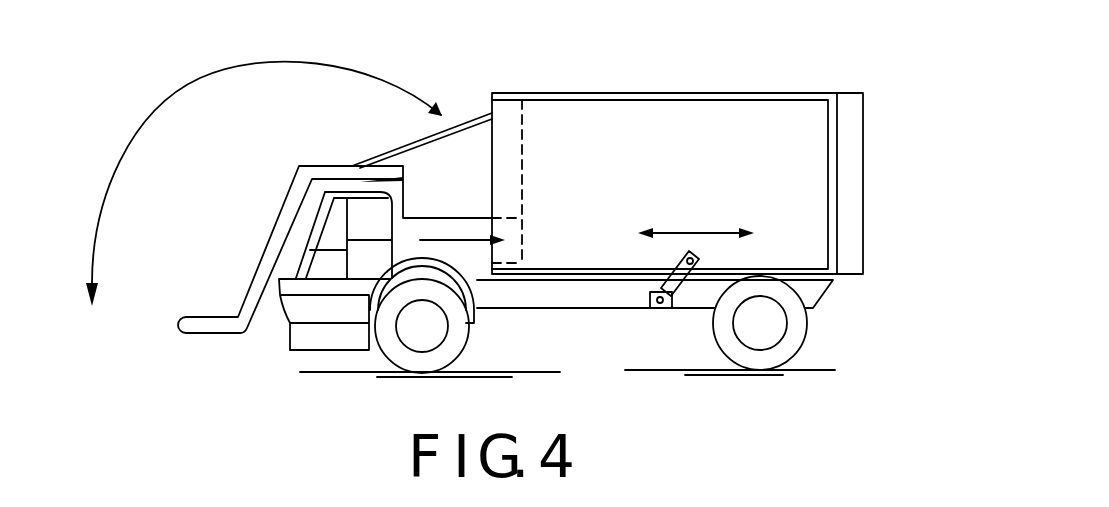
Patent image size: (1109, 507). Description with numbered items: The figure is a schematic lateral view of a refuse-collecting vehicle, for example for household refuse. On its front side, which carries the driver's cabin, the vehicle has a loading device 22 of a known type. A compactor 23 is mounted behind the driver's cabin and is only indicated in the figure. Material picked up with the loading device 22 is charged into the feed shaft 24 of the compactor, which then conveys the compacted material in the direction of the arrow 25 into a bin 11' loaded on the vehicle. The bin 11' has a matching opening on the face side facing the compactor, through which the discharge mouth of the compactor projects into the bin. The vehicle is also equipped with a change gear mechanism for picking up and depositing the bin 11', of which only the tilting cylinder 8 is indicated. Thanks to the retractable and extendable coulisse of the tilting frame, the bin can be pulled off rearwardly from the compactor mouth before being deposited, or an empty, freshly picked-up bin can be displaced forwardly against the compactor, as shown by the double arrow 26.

The bin 11' is at (677, 154).
The feed shaft 24 is at (455, 153).
The loading device 22 is at (257, 279).
The compactor 23 is at (410, 243).
The arrow 25 is at (468, 242).
The double arrow 26 is at (698, 233).
The tilting cylinder 8 is at (690, 285).